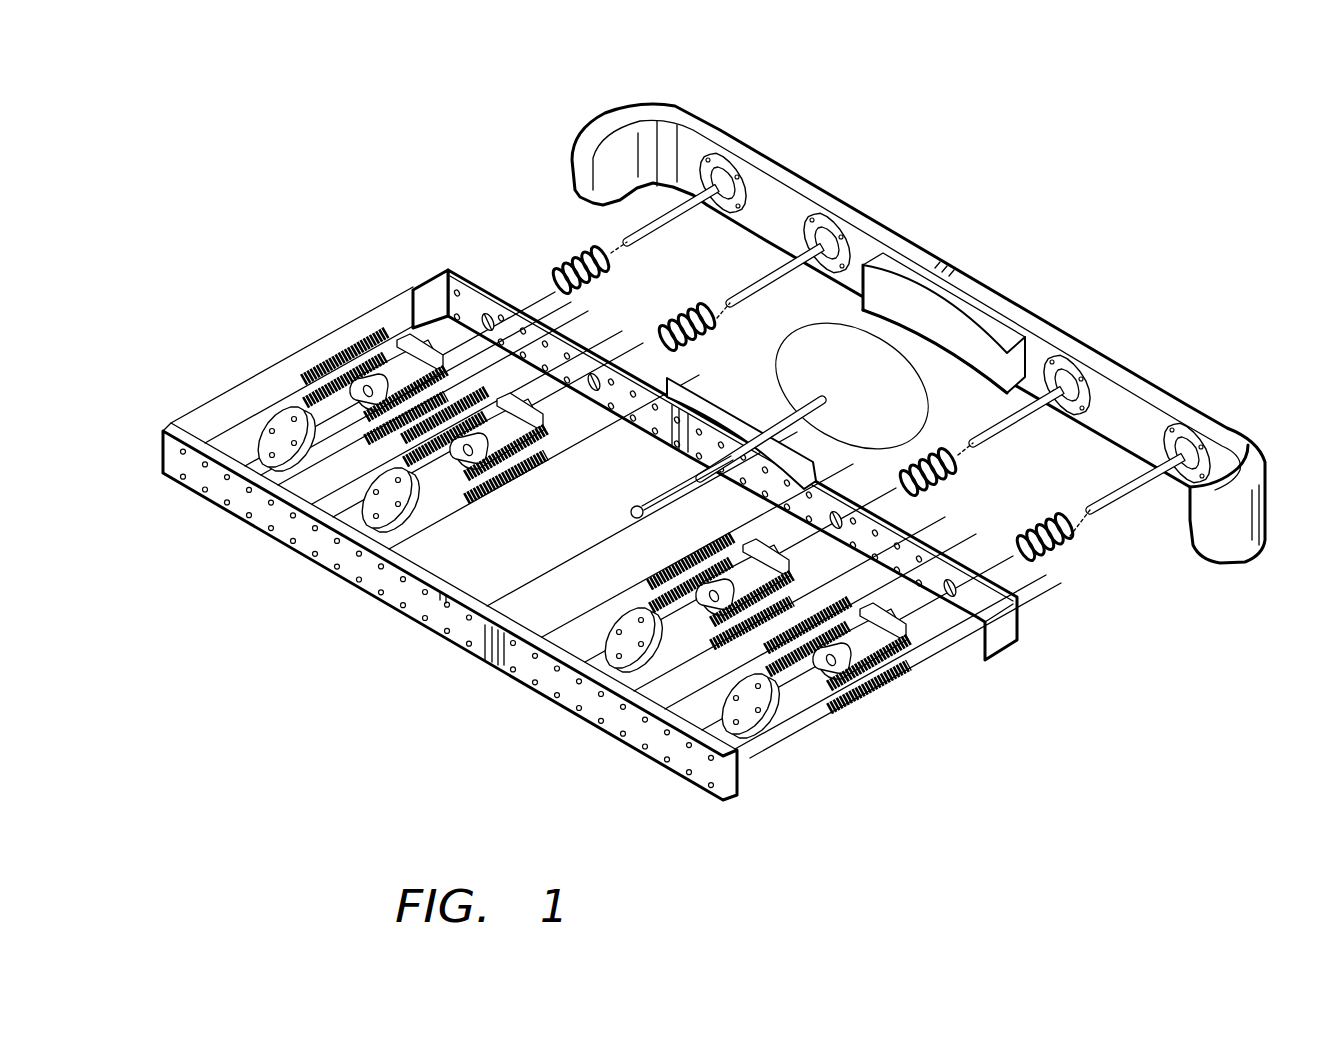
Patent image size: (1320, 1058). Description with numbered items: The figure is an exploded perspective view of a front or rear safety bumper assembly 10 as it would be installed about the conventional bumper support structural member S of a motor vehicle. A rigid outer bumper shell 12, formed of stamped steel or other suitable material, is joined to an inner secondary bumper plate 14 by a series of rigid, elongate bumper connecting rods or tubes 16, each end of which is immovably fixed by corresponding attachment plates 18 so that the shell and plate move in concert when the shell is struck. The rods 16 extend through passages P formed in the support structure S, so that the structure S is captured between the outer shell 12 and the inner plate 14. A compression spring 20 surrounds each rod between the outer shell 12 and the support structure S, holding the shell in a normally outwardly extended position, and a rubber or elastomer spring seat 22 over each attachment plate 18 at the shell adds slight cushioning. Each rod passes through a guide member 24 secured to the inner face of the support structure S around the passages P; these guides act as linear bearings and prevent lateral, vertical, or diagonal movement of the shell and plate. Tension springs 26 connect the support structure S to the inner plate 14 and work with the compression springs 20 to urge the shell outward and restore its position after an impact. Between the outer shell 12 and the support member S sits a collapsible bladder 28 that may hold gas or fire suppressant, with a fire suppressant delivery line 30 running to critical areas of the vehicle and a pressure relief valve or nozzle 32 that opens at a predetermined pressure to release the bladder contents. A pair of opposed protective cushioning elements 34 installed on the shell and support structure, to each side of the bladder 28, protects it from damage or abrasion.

The safety bumper assembly 10 is at (368, 649).
The outer bumper shell 12 is at (600, 120).
The inner secondary bumper plate 14 is at (165, 430).
The bumper connecting rods or tubes 16 is at (681, 211).
The attachment plates 18 is at (833, 232).
The compression spring 20 is at (600, 273).
The spring seat 22 is at (830, 220).
The guide member 24 is at (400, 334).
The tension springs 26 is at (306, 405).
The collapsible bladder 28 is at (849, 377).
The fire suppressant delivery line 30 is at (803, 425).
The pressure relief valve or nozzle 32 is at (630, 511).
The protective cushioning elements 34 is at (705, 403).
The bumper support structural member S is at (448, 270).
The passages P is at (598, 378).